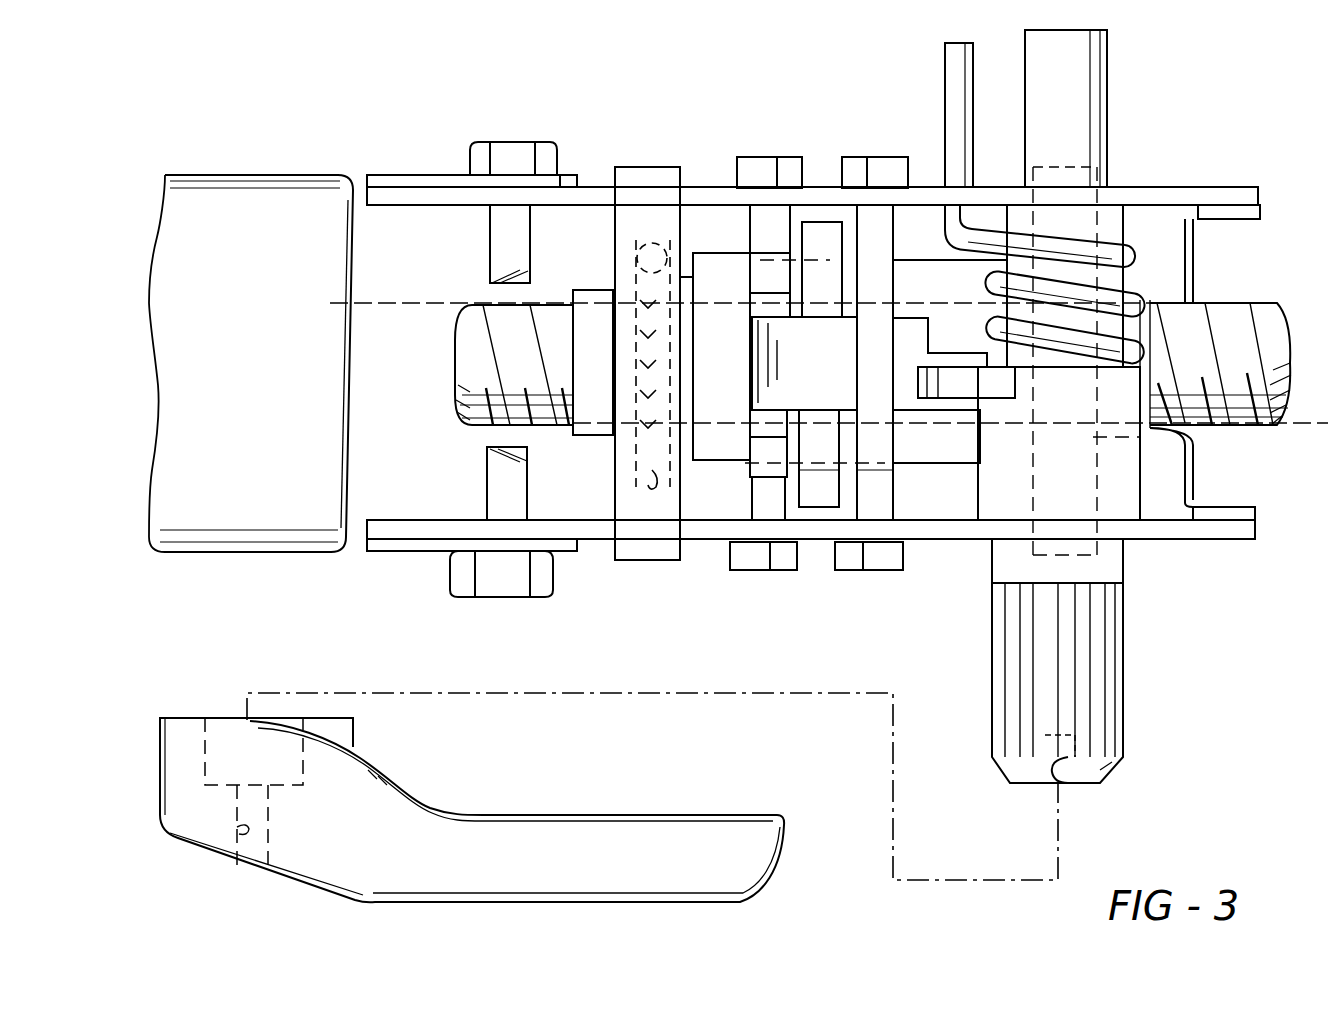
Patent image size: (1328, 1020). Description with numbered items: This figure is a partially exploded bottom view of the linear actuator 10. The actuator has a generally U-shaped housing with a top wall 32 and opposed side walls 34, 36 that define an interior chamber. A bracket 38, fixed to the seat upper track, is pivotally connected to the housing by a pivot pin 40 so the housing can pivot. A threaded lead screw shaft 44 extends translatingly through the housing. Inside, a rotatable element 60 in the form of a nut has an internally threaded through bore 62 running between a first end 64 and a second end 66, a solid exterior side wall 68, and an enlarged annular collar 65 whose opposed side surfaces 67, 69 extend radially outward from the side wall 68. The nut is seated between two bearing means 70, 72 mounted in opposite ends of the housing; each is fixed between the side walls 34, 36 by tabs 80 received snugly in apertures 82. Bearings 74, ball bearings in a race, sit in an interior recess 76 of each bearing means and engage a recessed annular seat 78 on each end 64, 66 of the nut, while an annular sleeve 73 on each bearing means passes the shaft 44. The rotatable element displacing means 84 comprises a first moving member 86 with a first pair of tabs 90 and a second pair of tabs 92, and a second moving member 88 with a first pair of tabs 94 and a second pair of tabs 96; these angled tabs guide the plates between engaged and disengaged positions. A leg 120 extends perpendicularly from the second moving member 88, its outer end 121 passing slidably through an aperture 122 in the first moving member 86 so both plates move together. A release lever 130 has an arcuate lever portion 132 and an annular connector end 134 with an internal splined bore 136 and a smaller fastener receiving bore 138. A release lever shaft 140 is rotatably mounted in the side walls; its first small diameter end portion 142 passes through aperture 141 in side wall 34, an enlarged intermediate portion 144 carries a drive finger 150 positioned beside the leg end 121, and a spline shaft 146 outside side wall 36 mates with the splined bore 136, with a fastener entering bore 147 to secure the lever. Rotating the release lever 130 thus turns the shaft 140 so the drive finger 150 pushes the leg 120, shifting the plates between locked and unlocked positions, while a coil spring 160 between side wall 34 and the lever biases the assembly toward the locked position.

The linear actuator 10 is at (798, 85).
The top wall 32 is at (1190, 240).
The side wall 34 is at (1168, 195).
The side wall 36 is at (1250, 527).
The bracket 38 is at (200, 175).
The pivot pin 40 is at (500, 233).
The shaft 44 is at (505, 323).
The rotatable element 60 is at (936, 260).
The internally threaded through bore 62 is at (923, 310).
The first end 64 is at (1170, 302).
The annular collar 65 is at (820, 215).
The second end 66 is at (540, 163).
The side surface 67 is at (860, 203).
The exterior side wall 68 is at (715, 470).
The side surface 69 is at (755, 170).
The bearing means 70 is at (1060, 583).
The bearing means 72 is at (620, 165).
The annular sleeve 73 is at (600, 445).
The bearings 74 is at (600, 420).
The interior recess 76 is at (650, 485).
The recessed annular seat 78 is at (660, 262).
The tabs 80 is at (645, 175).
The apertures 82 is at (607, 203).
The rotatable element displacing means 84 is at (812, 556).
The first moving member 86 is at (867, 493).
The second moving member 88 is at (762, 480).
The first pair of tabs 90 is at (885, 165).
The second pair of tabs 92 is at (887, 570).
The first pair of tabs 94 is at (740, 172).
The second pair of tabs 96 is at (748, 570).
The leg 120 is at (850, 358).
The outer end 121 is at (930, 352).
The aperture 122 is at (873, 415).
The release lever 130 is at (703, 807).
The lever portion 132 is at (488, 812).
The connector end 134 is at (160, 770).
The internal splined bore 136 is at (207, 753).
The fastener receiving bore 138 is at (237, 830).
The release lever shaft 140 is at (1170, 597).
The aperture 141 is at (1090, 190).
The first small diameter end portion 142 is at (1100, 55).
The enlarged intermediate portion 144 is at (1070, 272).
The spline shaft 146 is at (1092, 700).
The bore 147 is at (1065, 780).
The drive finger 150 is at (965, 385).
The coil spring 160 is at (975, 43).